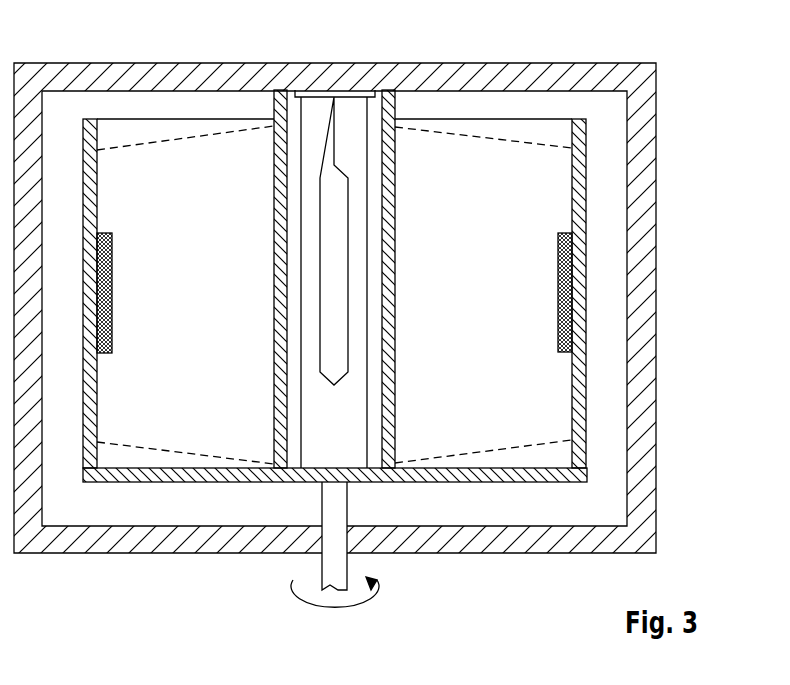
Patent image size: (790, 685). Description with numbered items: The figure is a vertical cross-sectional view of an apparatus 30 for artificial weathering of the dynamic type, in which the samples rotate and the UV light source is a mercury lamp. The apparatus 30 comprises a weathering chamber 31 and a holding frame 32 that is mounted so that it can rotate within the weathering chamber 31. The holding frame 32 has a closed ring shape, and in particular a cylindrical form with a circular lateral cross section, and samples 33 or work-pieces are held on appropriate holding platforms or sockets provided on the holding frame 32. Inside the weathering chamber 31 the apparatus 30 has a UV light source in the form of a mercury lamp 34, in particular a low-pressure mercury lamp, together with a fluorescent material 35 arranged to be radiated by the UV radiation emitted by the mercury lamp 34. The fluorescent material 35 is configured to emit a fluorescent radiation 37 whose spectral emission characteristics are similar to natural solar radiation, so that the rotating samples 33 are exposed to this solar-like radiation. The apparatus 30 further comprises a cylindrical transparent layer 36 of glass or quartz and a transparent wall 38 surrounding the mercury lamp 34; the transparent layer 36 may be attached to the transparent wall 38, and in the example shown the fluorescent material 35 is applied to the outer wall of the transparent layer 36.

The apparatus 30 is at (44, 28).
The weathering chamber 31 is at (657, 362).
The holding frame 32 is at (573, 178).
The samples 33 is at (112, 313).
The mercury lamp 34 is at (332, 217).
The fluorescent material 35 is at (281, 345).
The transparent layer 36 is at (293, 228).
The fluorescent radiation 37 is at (150, 148).
The transparent wall 38 is at (370, 348).